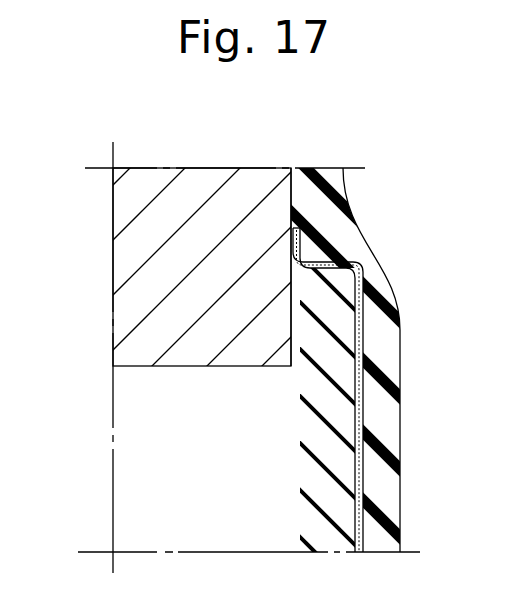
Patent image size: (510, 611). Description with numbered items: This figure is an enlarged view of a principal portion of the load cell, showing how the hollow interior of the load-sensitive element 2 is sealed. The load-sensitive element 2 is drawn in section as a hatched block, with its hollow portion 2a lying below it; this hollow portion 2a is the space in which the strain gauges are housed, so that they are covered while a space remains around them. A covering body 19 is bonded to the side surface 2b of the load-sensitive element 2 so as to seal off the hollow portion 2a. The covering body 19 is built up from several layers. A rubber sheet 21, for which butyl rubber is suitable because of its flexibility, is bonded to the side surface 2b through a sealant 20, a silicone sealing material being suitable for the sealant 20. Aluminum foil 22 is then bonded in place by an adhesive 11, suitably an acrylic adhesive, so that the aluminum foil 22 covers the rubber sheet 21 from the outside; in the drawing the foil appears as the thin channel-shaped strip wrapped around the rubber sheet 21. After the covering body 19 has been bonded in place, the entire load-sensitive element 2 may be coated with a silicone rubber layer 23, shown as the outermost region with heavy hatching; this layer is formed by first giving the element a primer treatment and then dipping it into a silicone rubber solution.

The load-sensitive element 2 is at (198, 182).
The hollow portion 2a is at (145, 443).
The side surface 2b is at (291, 195).
The adhesive 11 is at (365, 348).
The covering body 19 is at (255, 360).
The sealant 20 is at (295, 337).
The rubber sheet 21 is at (300, 465).
The aluminum foil 22 is at (363, 416).
The silicone rubber layer 23 is at (348, 228).